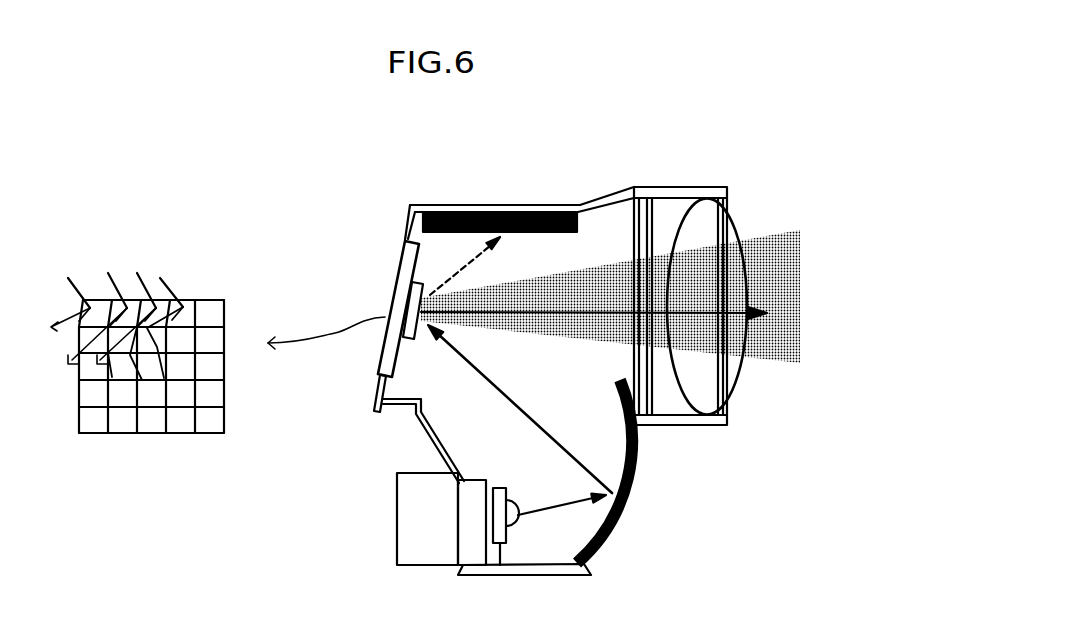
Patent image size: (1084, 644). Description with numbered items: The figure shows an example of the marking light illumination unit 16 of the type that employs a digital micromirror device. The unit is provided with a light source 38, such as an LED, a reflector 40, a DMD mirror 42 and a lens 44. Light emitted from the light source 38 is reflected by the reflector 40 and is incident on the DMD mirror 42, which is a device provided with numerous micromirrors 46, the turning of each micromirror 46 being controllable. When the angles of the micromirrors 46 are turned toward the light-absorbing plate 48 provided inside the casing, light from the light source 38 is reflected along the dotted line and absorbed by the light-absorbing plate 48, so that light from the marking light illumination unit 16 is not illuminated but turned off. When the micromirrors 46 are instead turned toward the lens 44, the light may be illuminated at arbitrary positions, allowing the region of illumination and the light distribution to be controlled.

The marking light illumination unit 16 is at (650, 127).
The light source 38 is at (510, 500).
The reflector 40 is at (632, 477).
The DMD mirror 42 is at (413, 296).
The lens 44 is at (707, 212).
The micromirrors 46 is at (213, 307).
The light-absorbing plate 48 is at (543, 233).